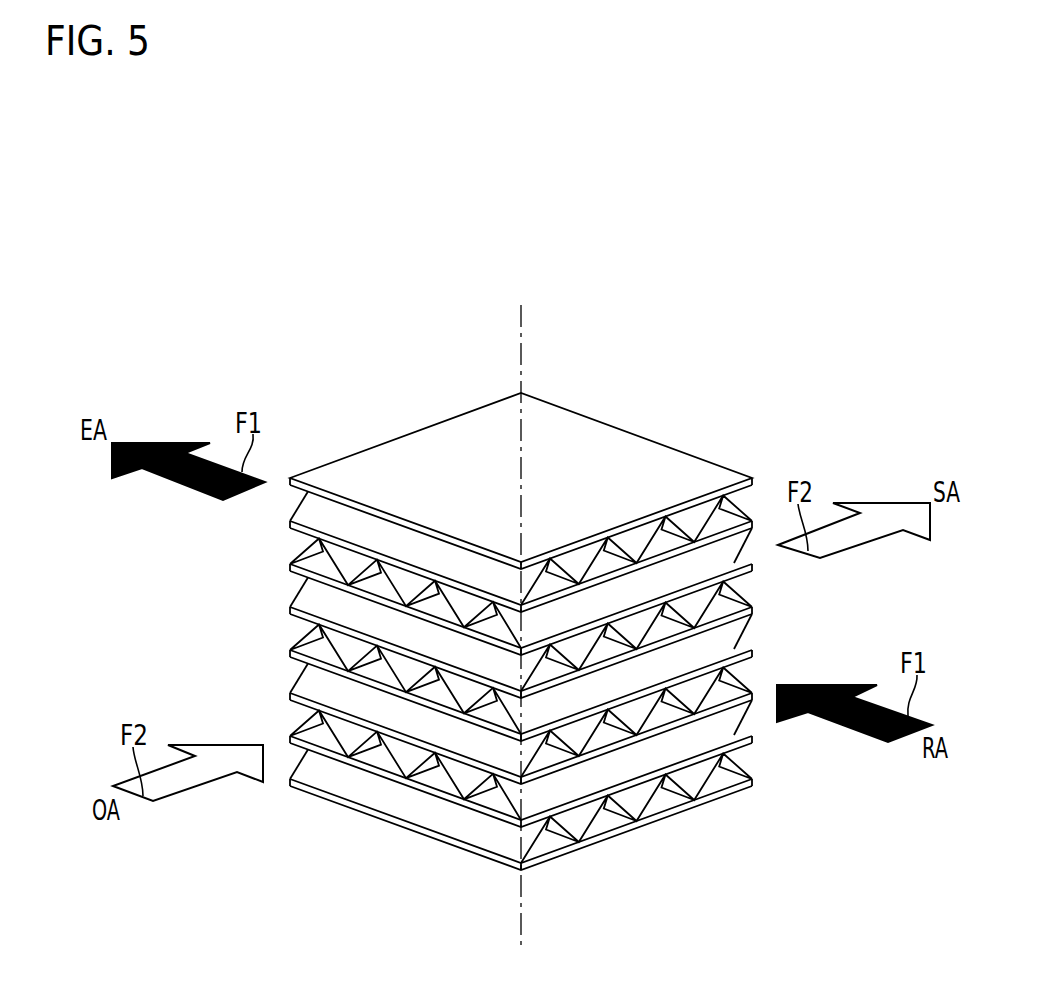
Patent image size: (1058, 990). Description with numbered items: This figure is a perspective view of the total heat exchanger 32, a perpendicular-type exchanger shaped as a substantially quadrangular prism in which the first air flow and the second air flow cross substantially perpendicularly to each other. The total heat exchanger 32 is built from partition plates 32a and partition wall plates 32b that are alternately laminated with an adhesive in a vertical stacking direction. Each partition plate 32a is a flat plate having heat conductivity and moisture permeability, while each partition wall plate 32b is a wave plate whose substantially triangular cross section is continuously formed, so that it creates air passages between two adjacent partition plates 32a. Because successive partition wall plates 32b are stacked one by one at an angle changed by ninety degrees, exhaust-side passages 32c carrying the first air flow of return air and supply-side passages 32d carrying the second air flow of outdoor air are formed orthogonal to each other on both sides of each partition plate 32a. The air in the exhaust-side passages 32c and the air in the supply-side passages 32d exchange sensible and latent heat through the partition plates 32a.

The total heat exchanger 32 is at (600, 368).
The partition plate 32a is at (372, 466).
The partition wall plate 32b is at (295, 722).
The exhaust-side passage 32c is at (660, 717).
The supply-side passage 32d is at (442, 782).